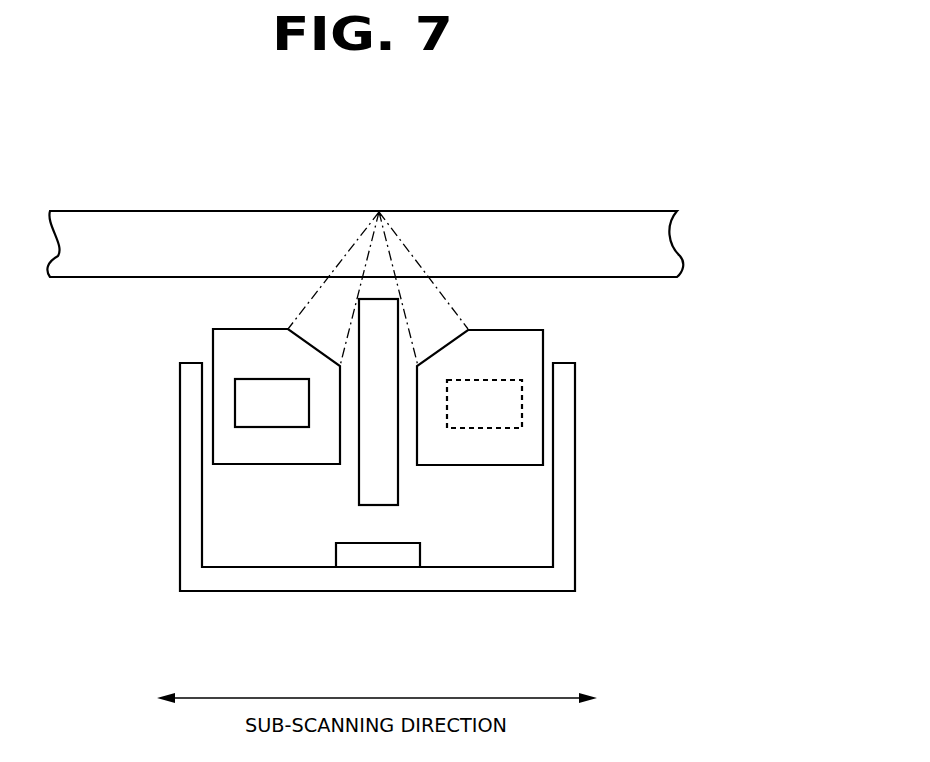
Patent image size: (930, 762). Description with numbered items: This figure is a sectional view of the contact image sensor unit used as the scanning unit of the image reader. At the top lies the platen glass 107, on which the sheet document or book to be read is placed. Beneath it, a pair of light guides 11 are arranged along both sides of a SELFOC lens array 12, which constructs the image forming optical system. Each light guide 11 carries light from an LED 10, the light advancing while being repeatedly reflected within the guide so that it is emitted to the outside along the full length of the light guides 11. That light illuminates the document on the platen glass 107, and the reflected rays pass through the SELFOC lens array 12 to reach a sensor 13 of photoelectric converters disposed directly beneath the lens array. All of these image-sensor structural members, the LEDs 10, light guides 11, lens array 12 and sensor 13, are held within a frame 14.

The platen glass 107 is at (546, 226).
The light guide 11 is at (212, 345).
The LED 10 is at (253, 402).
The SELFOC lens array 12 is at (385, 492).
The sensor 13 is at (375, 559).
The frame 14 is at (563, 530).